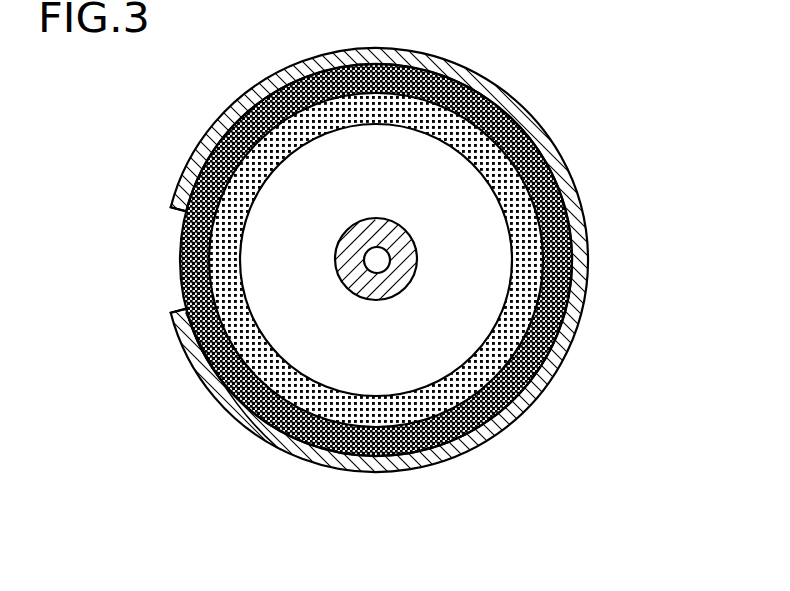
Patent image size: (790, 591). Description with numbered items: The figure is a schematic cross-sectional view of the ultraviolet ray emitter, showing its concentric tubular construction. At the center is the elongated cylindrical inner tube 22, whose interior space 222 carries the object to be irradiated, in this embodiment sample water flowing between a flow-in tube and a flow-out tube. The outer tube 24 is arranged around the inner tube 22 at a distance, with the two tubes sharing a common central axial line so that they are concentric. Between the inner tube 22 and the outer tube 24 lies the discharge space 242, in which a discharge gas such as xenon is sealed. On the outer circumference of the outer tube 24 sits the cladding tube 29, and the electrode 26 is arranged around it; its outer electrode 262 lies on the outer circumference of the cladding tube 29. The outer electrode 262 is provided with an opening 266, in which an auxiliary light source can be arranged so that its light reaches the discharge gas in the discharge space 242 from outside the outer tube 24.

The inner tube 22 is at (345, 235).
The interior space 222 is at (385, 258).
The discharge space 242 is at (458, 302).
The outer tube 24 is at (492, 363).
The cladding tube 29 is at (485, 408).
The electrode 26 is at (373, 476).
The outer electrode 262 is at (231, 380).
The opening 266 is at (162, 258).